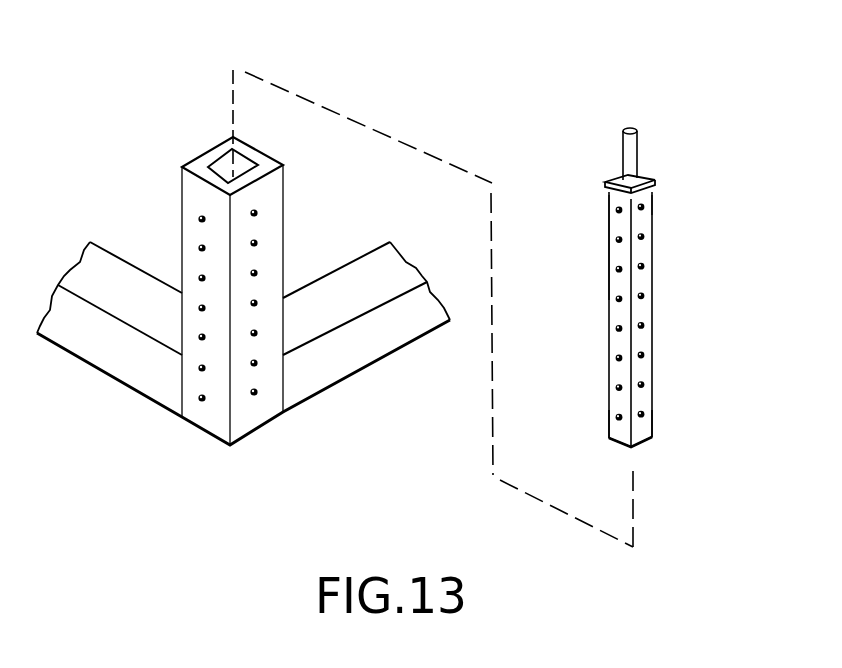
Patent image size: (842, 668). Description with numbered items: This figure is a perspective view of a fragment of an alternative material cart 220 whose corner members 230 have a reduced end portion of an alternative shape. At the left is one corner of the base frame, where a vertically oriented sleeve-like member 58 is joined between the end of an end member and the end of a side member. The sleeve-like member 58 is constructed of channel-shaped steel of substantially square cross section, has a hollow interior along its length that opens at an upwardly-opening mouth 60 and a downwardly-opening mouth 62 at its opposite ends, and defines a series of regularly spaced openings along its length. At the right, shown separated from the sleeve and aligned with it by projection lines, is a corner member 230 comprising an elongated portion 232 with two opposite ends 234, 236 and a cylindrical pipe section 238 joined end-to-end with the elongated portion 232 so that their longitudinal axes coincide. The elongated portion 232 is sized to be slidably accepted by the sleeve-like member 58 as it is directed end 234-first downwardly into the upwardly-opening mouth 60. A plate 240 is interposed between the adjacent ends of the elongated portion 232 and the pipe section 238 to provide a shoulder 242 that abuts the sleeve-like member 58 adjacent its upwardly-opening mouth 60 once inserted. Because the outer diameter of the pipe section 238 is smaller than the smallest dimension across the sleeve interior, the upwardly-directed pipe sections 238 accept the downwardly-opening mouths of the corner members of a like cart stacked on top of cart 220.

The sleeve-like member 58 is at (247, 418).
The upwardly-opening mouth 60 is at (218, 163).
The downwardly-opening mouth 62 is at (197, 425).
The material cart 220 is at (68, 228).
The corner member 230 is at (608, 287).
The elongated portion 232 is at (652, 328).
The end 234 is at (610, 420).
The end 236 is at (610, 213).
The cylindrical pipe section 238 is at (637, 152).
The plate 240 is at (616, 178).
The shoulder 242 is at (653, 202).